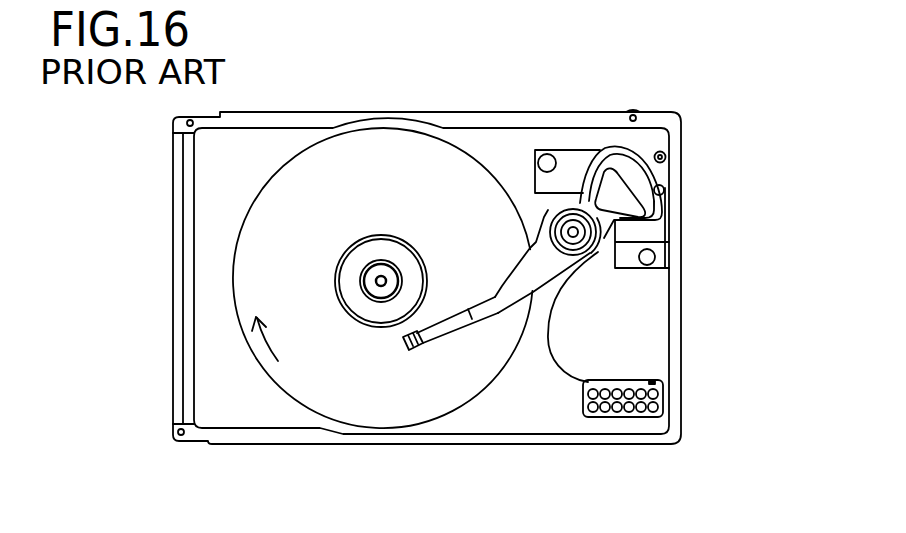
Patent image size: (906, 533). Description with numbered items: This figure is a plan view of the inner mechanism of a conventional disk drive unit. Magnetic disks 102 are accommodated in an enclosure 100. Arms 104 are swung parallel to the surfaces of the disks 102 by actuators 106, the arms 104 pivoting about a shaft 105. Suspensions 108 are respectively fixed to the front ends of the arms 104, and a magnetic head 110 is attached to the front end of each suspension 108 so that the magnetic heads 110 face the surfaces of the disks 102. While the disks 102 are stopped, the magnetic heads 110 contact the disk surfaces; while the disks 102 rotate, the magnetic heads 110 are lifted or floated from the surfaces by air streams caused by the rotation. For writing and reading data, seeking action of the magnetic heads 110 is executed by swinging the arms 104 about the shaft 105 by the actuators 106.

The enclosure 100 is at (428, 115).
The magnetic disk 102 is at (300, 170).
The arm 104 is at (548, 290).
The shaft 105 is at (573, 228).
The actuator 106 is at (665, 194).
The suspension 108 is at (447, 330).
The magnetic head 110 is at (404, 348).